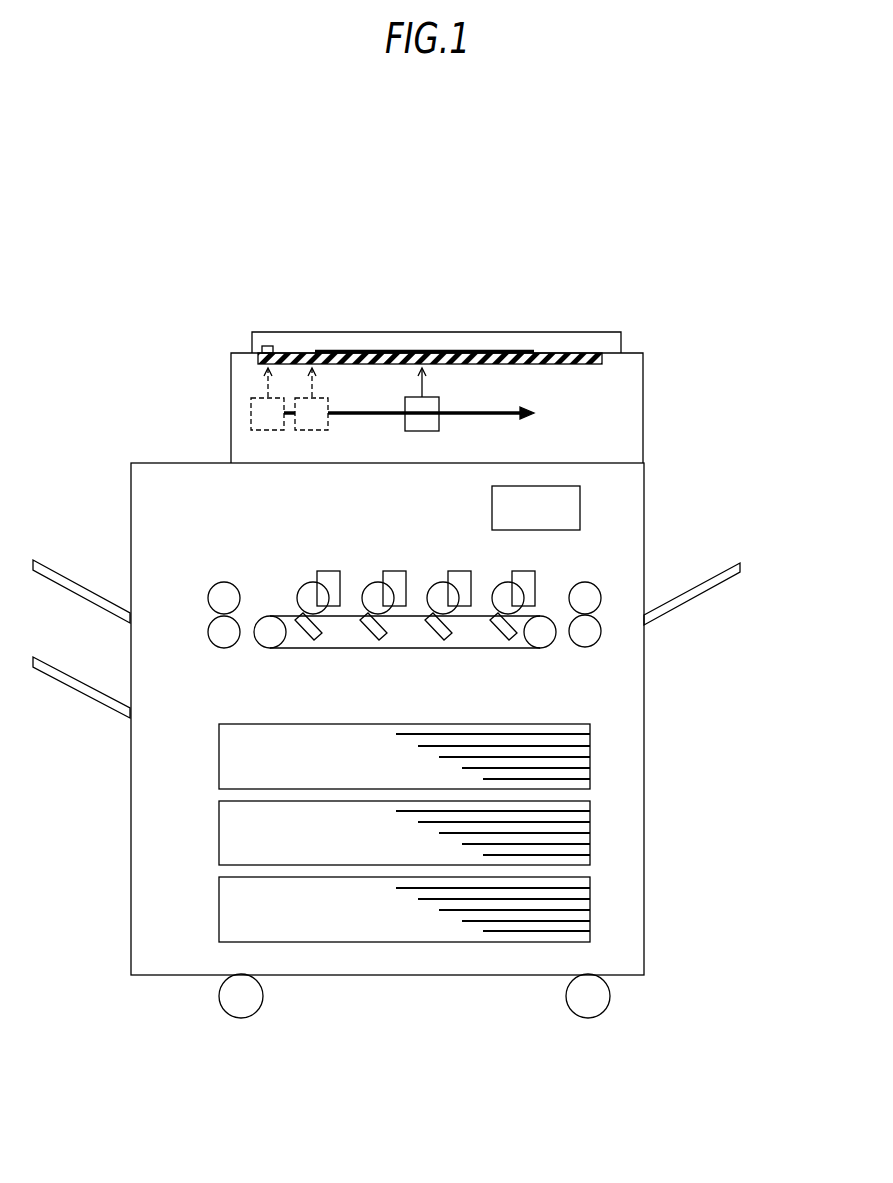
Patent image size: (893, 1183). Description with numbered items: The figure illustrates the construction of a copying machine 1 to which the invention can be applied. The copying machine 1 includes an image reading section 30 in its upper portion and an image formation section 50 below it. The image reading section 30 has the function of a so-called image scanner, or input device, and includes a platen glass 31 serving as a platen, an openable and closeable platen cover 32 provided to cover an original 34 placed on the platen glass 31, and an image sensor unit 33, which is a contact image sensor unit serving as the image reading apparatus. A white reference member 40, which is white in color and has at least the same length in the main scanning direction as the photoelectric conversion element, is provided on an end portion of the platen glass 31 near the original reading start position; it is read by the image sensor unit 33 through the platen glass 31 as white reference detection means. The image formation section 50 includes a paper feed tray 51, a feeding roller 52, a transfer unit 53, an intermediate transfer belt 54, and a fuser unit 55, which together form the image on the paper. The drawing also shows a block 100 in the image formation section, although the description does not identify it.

The copying machine 1 is at (693, 297).
The image reading section 30 is at (760, 352).
The platen glass 31 is at (604, 358).
The platen cover 32 is at (318, 337).
The image sensor unit 33 is at (433, 399).
The original 34 is at (510, 349).
The white reference member 40 is at (271, 346).
The image formation section 50 is at (760, 467).
The paper feed tray 51 is at (219, 759).
The feeding roller 52 is at (598, 587).
The transfer unit 53 is at (516, 648).
The intermediate transfer belt 54 is at (334, 571).
The fuser unit 55 is at (207, 598).
The controller 100 is at (580, 503).